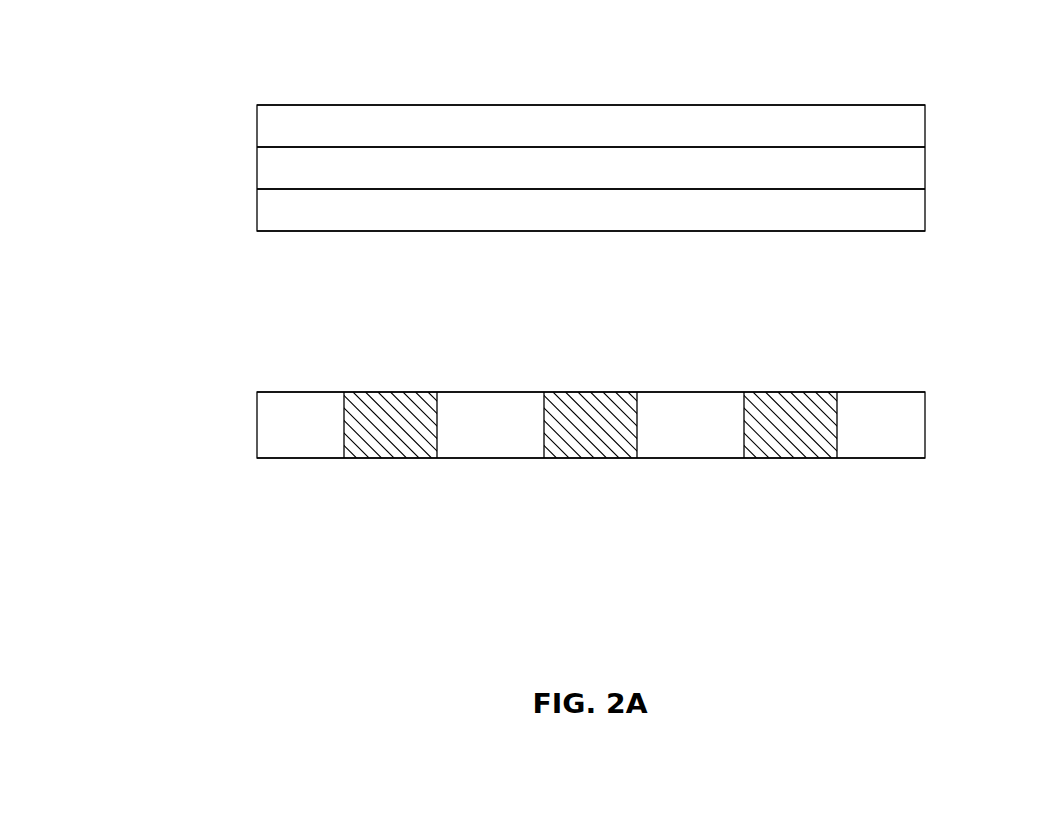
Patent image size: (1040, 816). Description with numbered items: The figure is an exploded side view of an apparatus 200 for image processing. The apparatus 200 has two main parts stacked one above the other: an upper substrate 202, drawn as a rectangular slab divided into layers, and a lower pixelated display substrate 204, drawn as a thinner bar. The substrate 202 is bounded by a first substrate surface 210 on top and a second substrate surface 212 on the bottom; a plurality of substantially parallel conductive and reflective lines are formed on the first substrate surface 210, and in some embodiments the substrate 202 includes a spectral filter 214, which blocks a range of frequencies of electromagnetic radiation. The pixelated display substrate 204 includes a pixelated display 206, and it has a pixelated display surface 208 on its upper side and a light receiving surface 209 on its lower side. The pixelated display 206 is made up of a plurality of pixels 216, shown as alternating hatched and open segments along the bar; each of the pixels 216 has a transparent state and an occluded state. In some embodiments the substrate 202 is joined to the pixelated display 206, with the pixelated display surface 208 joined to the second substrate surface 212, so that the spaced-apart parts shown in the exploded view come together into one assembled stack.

The apparatus 200 is at (247, 105).
The substrate 202 is at (938, 105).
The pixelated display substrate 204 is at (938, 392).
The pixelated display 206 is at (255, 533).
The pixelated display surface 208 is at (913, 382).
The light receiving surface 209 is at (688, 468).
The first substrate surface 210 is at (748, 98).
The second substrate surface 212 is at (305, 248).
The spectral filter 214 is at (397, 172).
The pixels 216 is at (297, 392).